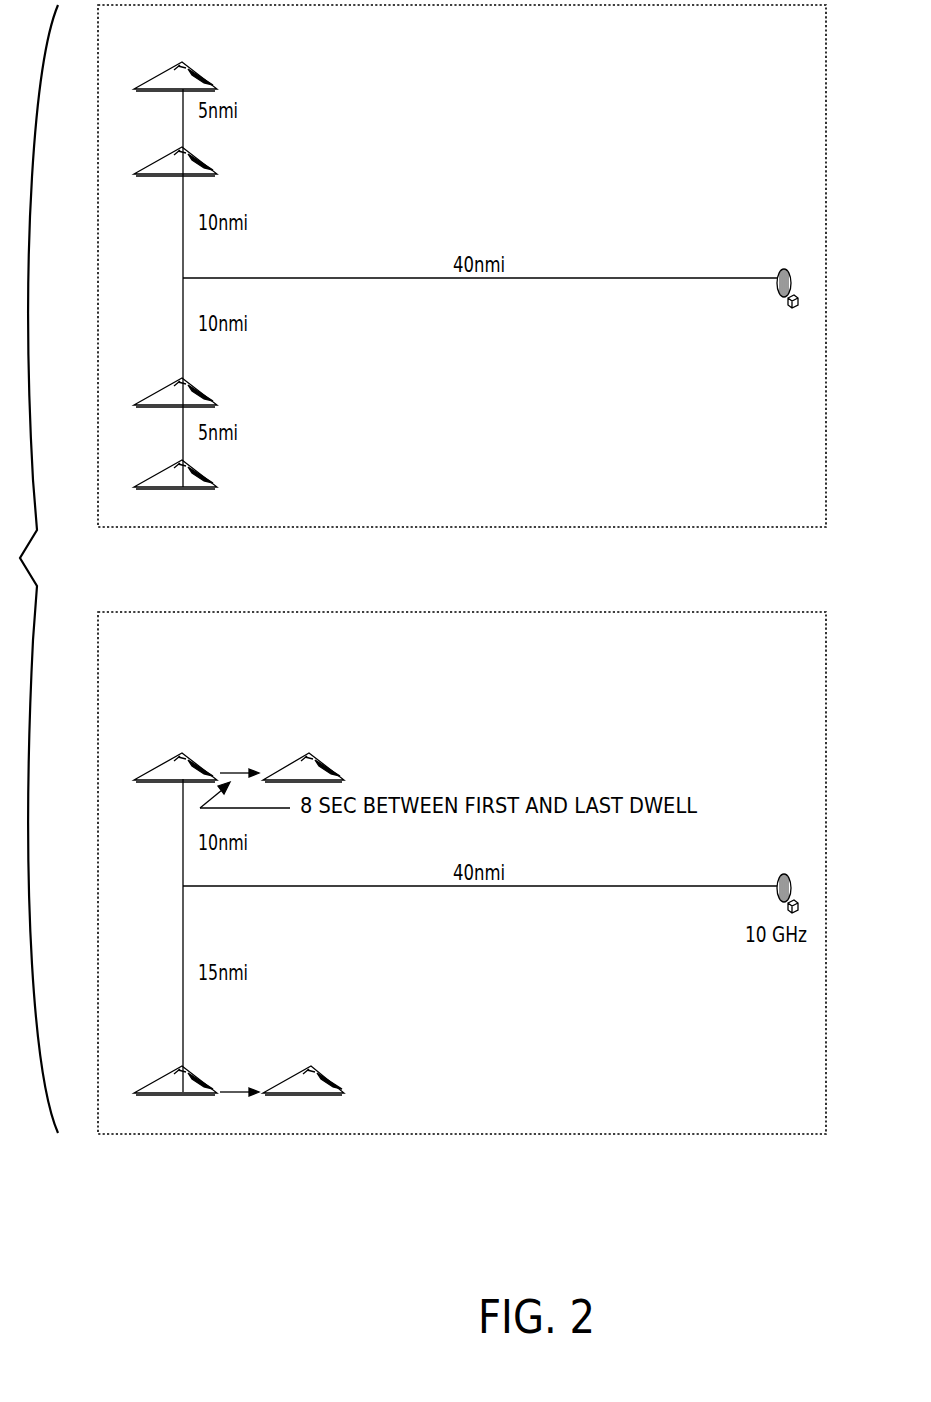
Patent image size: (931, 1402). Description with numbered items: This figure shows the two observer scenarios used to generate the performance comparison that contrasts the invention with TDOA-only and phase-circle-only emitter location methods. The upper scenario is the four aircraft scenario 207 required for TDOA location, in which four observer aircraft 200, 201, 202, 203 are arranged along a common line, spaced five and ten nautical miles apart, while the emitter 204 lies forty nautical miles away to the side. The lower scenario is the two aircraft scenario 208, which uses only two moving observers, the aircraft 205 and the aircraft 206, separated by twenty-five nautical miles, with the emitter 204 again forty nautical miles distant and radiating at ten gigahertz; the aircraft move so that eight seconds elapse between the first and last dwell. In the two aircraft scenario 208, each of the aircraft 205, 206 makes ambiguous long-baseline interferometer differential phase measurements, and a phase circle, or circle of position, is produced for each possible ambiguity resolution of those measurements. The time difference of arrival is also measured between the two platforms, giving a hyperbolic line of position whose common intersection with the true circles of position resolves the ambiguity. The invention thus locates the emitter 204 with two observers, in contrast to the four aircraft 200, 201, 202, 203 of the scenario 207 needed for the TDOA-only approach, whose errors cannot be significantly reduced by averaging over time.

The aircraft 200 is at (204, 70).
The aircraft 201 is at (210, 165).
The aircraft 202 is at (204, 388).
The aircraft 203 is at (210, 484).
The emitter 204 is at (780, 270).
The aircraft 205 is at (212, 770).
The aircraft 206 is at (212, 1090).
The four aircraft scenario 207 is at (705, 527).
The two aircraft scenario 208 is at (705, 1134).